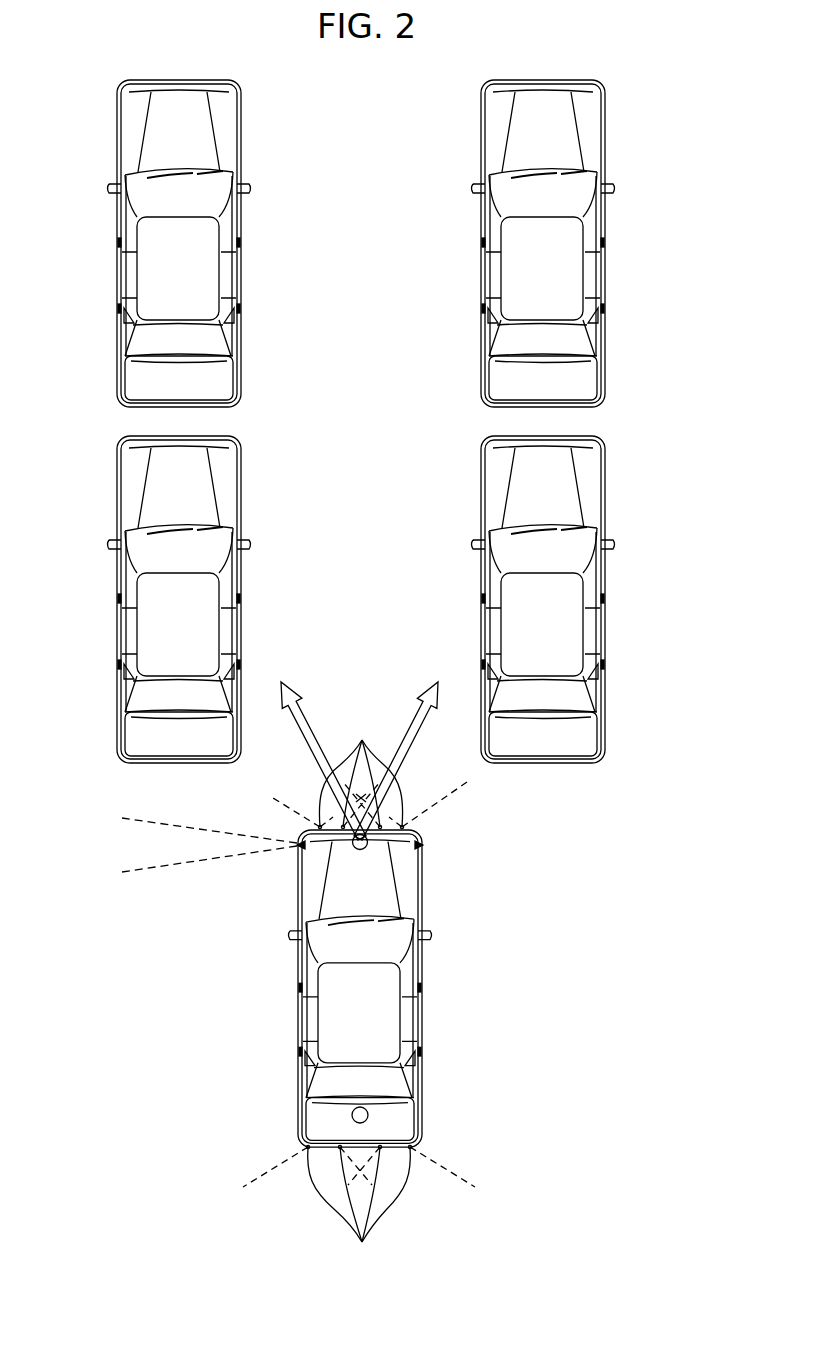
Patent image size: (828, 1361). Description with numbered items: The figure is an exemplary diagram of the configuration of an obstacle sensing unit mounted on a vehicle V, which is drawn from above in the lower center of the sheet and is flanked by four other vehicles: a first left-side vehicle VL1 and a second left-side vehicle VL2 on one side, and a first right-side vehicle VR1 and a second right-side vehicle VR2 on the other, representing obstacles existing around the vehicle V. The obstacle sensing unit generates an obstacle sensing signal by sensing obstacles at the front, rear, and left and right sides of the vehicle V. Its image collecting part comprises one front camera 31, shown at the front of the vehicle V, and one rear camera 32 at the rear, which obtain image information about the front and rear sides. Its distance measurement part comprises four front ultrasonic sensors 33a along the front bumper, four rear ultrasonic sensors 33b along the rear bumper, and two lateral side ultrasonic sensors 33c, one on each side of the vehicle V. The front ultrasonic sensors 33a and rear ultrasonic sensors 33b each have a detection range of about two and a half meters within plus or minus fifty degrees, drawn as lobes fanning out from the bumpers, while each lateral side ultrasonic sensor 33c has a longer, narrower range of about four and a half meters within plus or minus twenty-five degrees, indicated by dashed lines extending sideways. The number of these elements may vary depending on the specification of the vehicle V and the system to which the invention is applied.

The second left-side vehicle VL2 is at (188, 277).
The second right-side vehicle VR2 is at (552, 276).
The first left-side vehicle VL1 is at (188, 635).
The first right-side vehicle VR1 is at (552, 634).
The vehicle V is at (378, 1021).
The front camera 31 is at (418, 836).
The rear camera 32 is at (368, 1117).
The front ultrasonic sensors 33a is at (370, 761).
The rear ultrasonic sensors 33b is at (359, 1209).
The lateral side ultrasonic sensors 33c is at (297, 852).